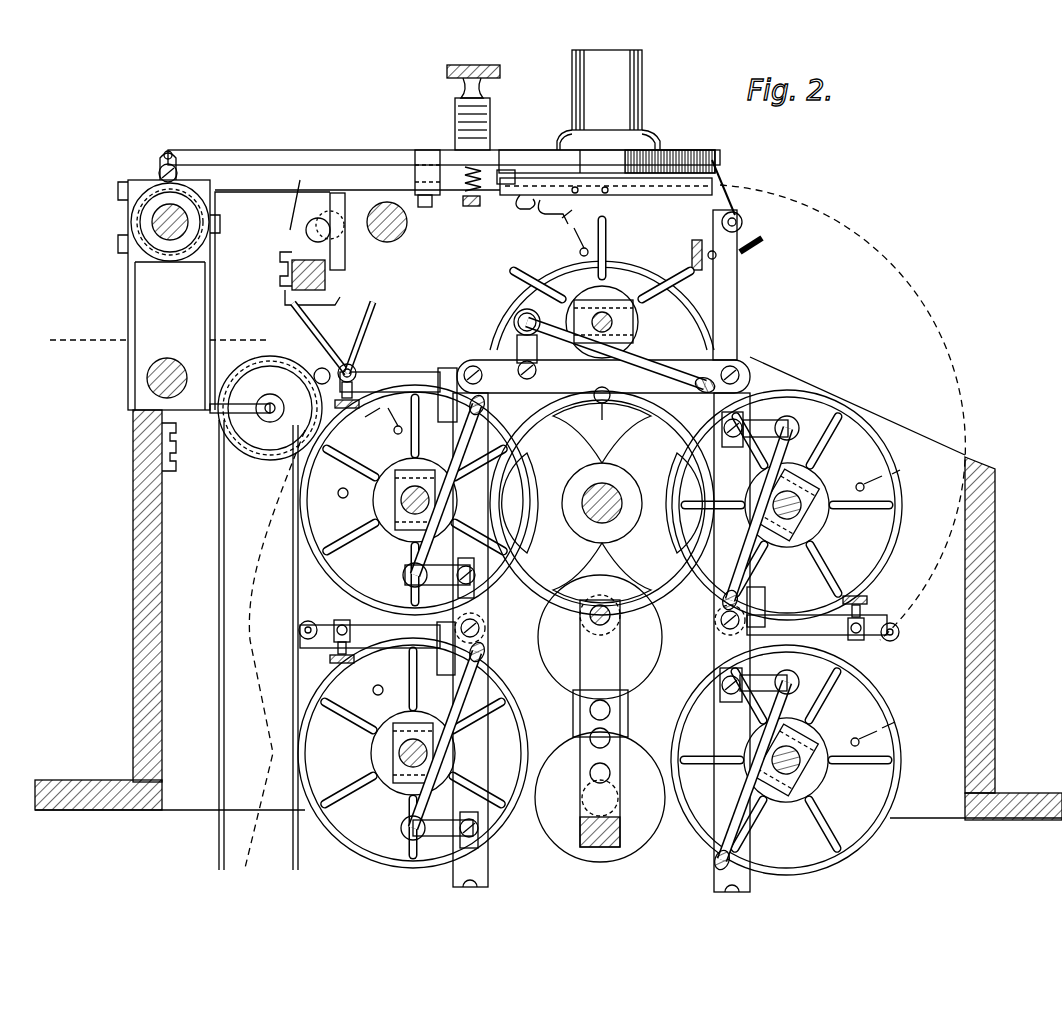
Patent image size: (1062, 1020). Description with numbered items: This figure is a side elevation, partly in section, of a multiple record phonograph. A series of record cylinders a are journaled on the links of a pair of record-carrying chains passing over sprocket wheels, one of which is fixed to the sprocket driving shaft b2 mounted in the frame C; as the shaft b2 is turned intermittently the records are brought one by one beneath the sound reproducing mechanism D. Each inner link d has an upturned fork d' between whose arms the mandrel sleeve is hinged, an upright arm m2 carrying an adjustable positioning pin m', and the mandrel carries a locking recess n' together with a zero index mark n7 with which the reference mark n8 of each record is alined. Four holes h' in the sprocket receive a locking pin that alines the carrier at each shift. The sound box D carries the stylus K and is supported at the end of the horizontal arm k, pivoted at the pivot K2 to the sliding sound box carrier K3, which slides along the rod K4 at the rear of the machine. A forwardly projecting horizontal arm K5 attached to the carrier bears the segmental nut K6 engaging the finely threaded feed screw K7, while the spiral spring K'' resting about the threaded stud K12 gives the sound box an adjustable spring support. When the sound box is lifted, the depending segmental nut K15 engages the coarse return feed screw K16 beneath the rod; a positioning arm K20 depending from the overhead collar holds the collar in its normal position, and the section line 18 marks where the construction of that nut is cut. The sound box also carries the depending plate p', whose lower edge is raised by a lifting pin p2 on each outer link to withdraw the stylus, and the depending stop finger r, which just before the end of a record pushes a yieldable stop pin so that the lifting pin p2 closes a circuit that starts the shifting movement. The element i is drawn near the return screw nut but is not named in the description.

The frame C is at (160, 590).
The sliding sound box carrier K3 is at (128, 240).
The rod K4 is at (150, 222).
The pivot K2 is at (172, 152).
The return feed screw K16 is at (172, 360).
The section line 18— 18 is at (159, 341).
The positioning arm K20 is at (205, 312).
The stylus K is at (444, 156).
The forwardly projecting horizontal arm K5 is at (283, 195).
The segmental nut K6 is at (432, 212).
The feed screw K7 is at (395, 238).
The pawl block i is at (295, 262).
The depending segmental nut K15 is at (492, 128).
The spiral spring K'' is at (500, 153).
The threaded stud K12 is at (472, 208).
The sound box D is at (660, 150).
The depending plate p' is at (638, 185).
The depending stop finger r is at (725, 178).
The lifting pin p2 is at (742, 222).
The upright arm m2 is at (737, 310).
The record cylinder a is at (490, 280).
The sprocket driving shaft b2 is at (614, 515).
The holes h' is at (599, 425).
The positioning pin m' is at (587, 597).
The locking recess n' is at (559, 632).
The zero mark n7 is at (627, 487).
The reference mark n8 is at (643, 480).
The link d is at (578, 338).
The upturned fork d' is at (621, 321).
The horizontal arm k is at (540, 208).